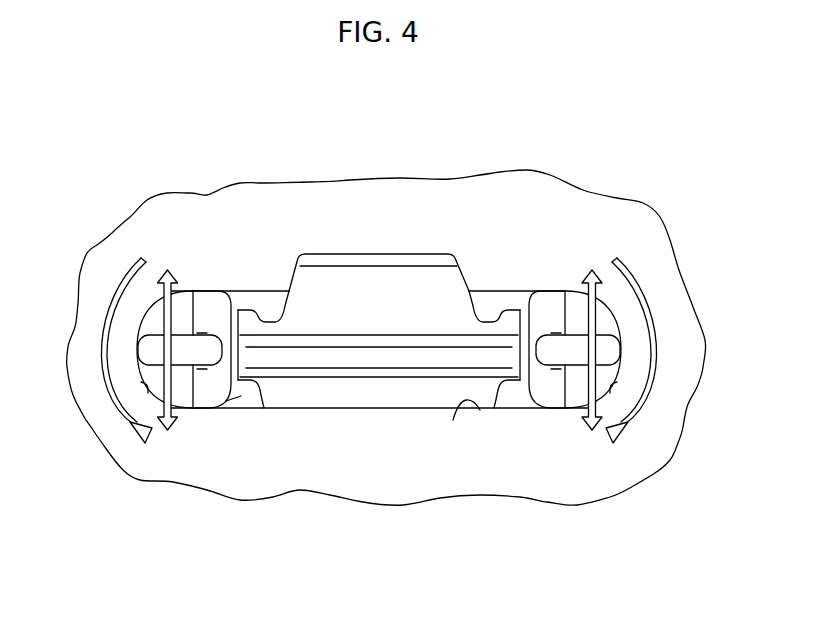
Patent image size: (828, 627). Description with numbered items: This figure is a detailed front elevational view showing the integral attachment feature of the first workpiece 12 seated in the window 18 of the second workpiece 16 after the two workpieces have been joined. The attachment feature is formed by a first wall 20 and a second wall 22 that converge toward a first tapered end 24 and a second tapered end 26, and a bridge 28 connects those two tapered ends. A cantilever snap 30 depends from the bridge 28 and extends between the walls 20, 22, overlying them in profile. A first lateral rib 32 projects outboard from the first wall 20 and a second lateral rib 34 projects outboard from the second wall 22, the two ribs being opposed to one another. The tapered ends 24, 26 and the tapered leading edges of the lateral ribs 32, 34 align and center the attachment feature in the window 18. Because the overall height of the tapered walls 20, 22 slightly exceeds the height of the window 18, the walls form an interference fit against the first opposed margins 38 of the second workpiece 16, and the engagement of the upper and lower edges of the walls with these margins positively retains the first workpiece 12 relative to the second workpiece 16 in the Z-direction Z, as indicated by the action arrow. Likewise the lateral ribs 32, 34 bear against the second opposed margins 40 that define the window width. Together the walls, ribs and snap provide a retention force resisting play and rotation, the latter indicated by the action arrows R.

The first workpiece 12 is at (291, 396).
The second workpiece 16 is at (608, 218).
The window 18 is at (258, 410).
The first wall 20 is at (207, 313).
The second wall 22 is at (552, 390).
The first tapered end 24 is at (237, 395).
The second tapered end 26 is at (512, 395).
The bridge 28 is at (395, 362).
The cantilever snap 30 is at (393, 287).
The first lateral rib 32 is at (143, 353).
The second lateral rib 34 is at (613, 350).
The first opposed margins 38 is at (453, 420).
The second opposed margins 40 is at (132, 426).
The rotation action arrows R is at (115, 285).
The Z-direction Z is at (163, 320).